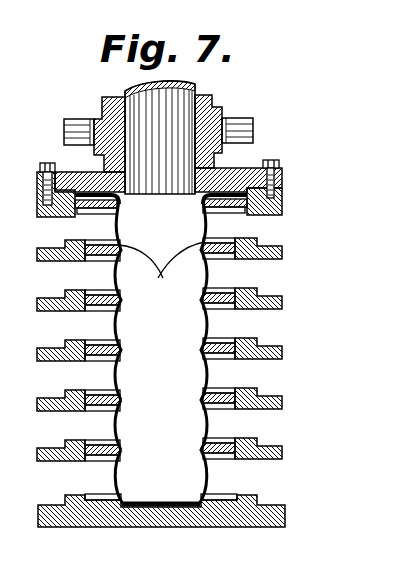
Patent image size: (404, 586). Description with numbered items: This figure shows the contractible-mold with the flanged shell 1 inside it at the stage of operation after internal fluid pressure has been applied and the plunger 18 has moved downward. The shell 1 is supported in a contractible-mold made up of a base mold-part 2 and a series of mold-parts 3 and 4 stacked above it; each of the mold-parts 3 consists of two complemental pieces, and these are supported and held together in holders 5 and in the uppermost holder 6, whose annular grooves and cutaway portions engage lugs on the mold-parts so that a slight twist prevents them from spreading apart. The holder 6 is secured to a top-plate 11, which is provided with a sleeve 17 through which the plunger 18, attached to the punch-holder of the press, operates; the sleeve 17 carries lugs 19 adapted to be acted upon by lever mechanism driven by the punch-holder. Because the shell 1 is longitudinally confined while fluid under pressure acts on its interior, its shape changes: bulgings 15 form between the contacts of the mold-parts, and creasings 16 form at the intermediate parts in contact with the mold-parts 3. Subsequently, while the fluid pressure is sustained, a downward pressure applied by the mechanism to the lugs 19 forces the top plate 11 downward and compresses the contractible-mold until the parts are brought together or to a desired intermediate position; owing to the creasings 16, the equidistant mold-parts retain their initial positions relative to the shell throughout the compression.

The flanged shell 1 is at (118, 320).
The mold-part 2 is at (256, 518).
The mold-part 3 is at (222, 250).
The mold-part 4 is at (218, 205).
The holder 5 is at (270, 254).
The holder 6 is at (259, 214).
The top-plate 11 is at (246, 172).
The bulging 15 is at (116, 423).
The creasing 16 is at (201, 303).
The sleeve 17 is at (211, 164).
The plunger 18 is at (160, 137).
The lug 19 is at (78, 124).